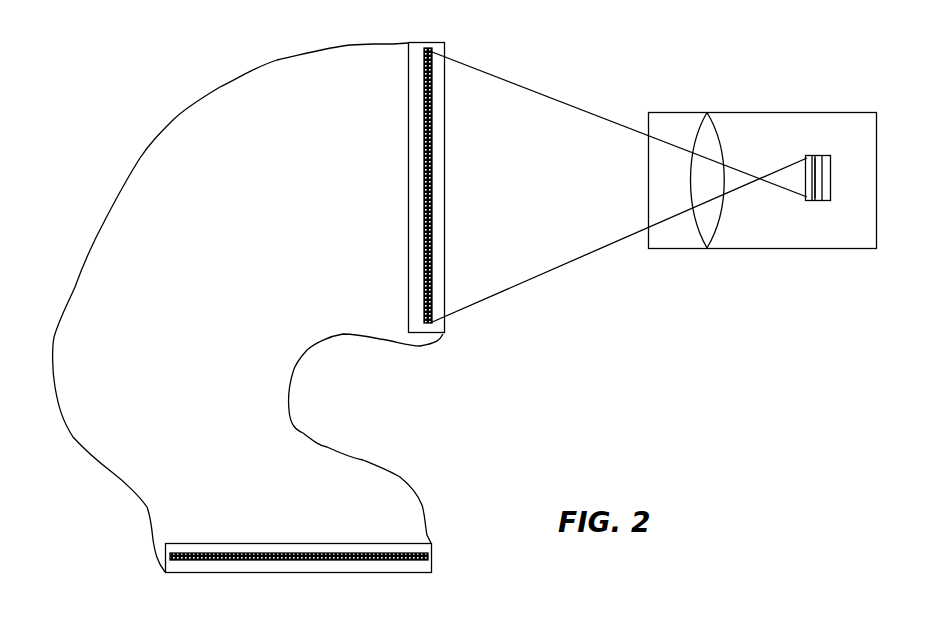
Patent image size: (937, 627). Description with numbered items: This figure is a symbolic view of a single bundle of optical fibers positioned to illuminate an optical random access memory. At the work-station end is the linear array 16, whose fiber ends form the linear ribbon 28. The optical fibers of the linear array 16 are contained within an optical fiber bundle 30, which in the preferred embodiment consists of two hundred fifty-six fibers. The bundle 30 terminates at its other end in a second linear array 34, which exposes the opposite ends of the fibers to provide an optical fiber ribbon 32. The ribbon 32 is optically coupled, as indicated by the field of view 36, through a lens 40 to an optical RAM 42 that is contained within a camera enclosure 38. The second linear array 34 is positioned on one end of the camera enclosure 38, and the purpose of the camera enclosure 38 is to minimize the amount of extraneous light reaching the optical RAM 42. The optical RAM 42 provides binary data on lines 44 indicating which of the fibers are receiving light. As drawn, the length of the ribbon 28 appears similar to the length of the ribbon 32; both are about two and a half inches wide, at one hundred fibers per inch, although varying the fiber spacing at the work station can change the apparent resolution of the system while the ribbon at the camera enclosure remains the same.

The linear array 16 is at (390, 572).
The linear ribbon 28 is at (430, 556).
The optical fiber bundle 30 is at (313, 438).
The optical fiber ribbon 32 is at (438, 333).
The second linear array 34 is at (420, 42).
The field of view 36 is at (570, 80).
The camera enclosure 38 is at (678, 112).
The lens 40 is at (722, 148).
The optical RAM 42 is at (812, 155).
The lines 44 is at (815, 200).